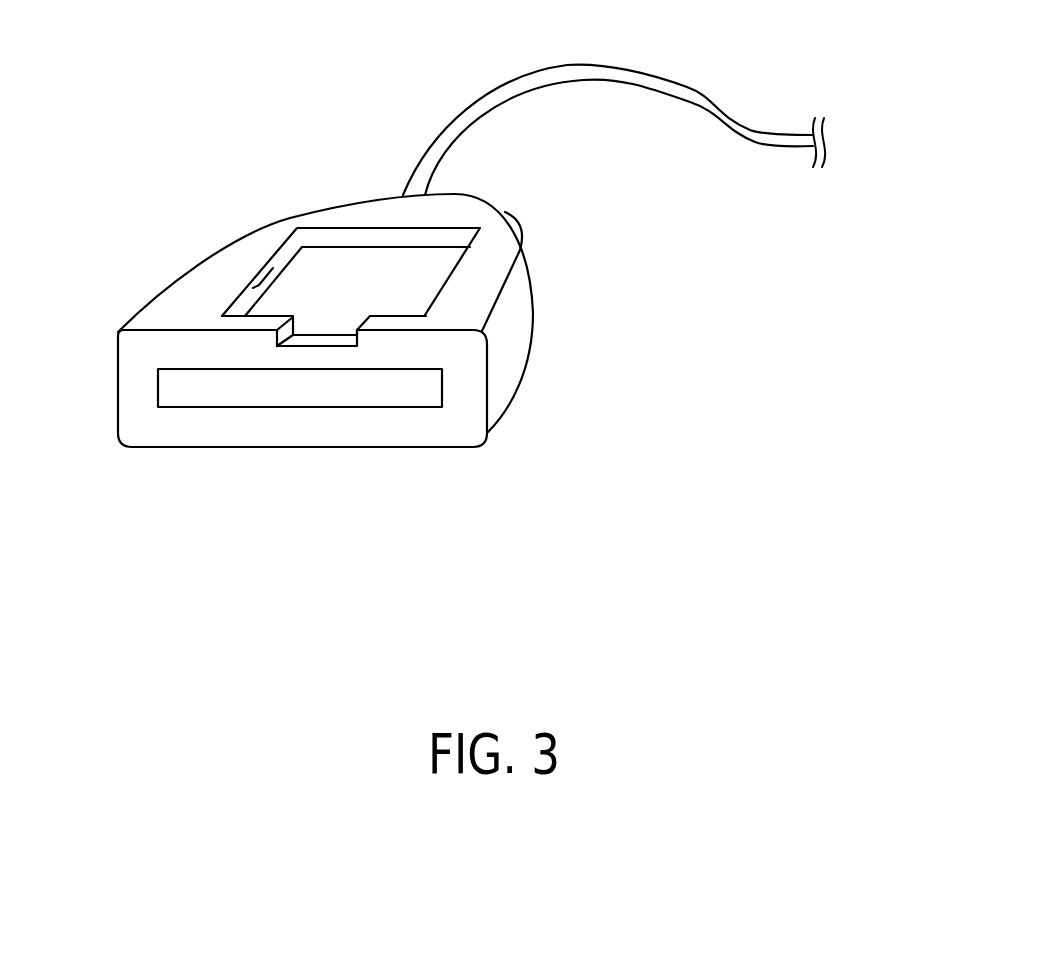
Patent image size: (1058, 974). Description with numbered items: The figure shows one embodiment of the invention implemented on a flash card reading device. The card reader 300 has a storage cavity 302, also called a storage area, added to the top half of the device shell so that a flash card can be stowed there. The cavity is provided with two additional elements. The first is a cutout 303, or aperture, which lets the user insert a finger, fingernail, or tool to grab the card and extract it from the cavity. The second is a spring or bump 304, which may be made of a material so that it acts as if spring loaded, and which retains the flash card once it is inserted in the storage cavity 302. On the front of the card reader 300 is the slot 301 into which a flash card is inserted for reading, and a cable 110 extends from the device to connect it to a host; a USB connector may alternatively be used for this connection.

The cable 110 is at (722, 110).
The card reader 300 is at (492, 282).
The slot 301 is at (385, 393).
The storage cavity 302 is at (433, 258).
The cutout 303 is at (340, 343).
The spring or bump 304 is at (260, 273).